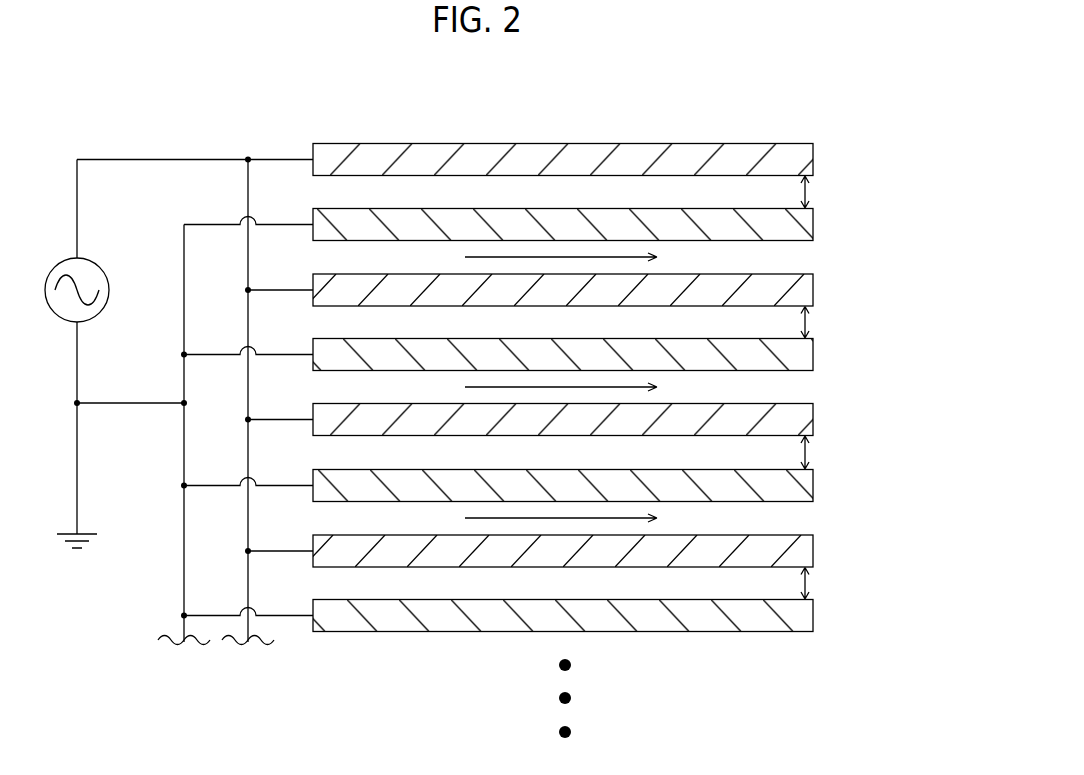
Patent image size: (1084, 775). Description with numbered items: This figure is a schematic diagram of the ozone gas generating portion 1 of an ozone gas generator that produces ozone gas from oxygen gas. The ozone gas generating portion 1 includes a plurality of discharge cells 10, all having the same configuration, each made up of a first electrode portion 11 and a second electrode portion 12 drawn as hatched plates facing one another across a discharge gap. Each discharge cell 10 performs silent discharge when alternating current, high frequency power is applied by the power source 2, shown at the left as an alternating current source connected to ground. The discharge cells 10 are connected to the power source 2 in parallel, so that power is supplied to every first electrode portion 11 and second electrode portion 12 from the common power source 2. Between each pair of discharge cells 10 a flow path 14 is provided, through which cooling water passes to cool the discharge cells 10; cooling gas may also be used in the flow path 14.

The ozone gas generating portion 1 is at (777, 112).
The power source 2 is at (101, 268).
The discharge cell 10 is at (636, 388).
The first electrode portion 11 is at (813, 156).
The second electrode portion 12 is at (813, 222).
The flow path 14 is at (800, 257).